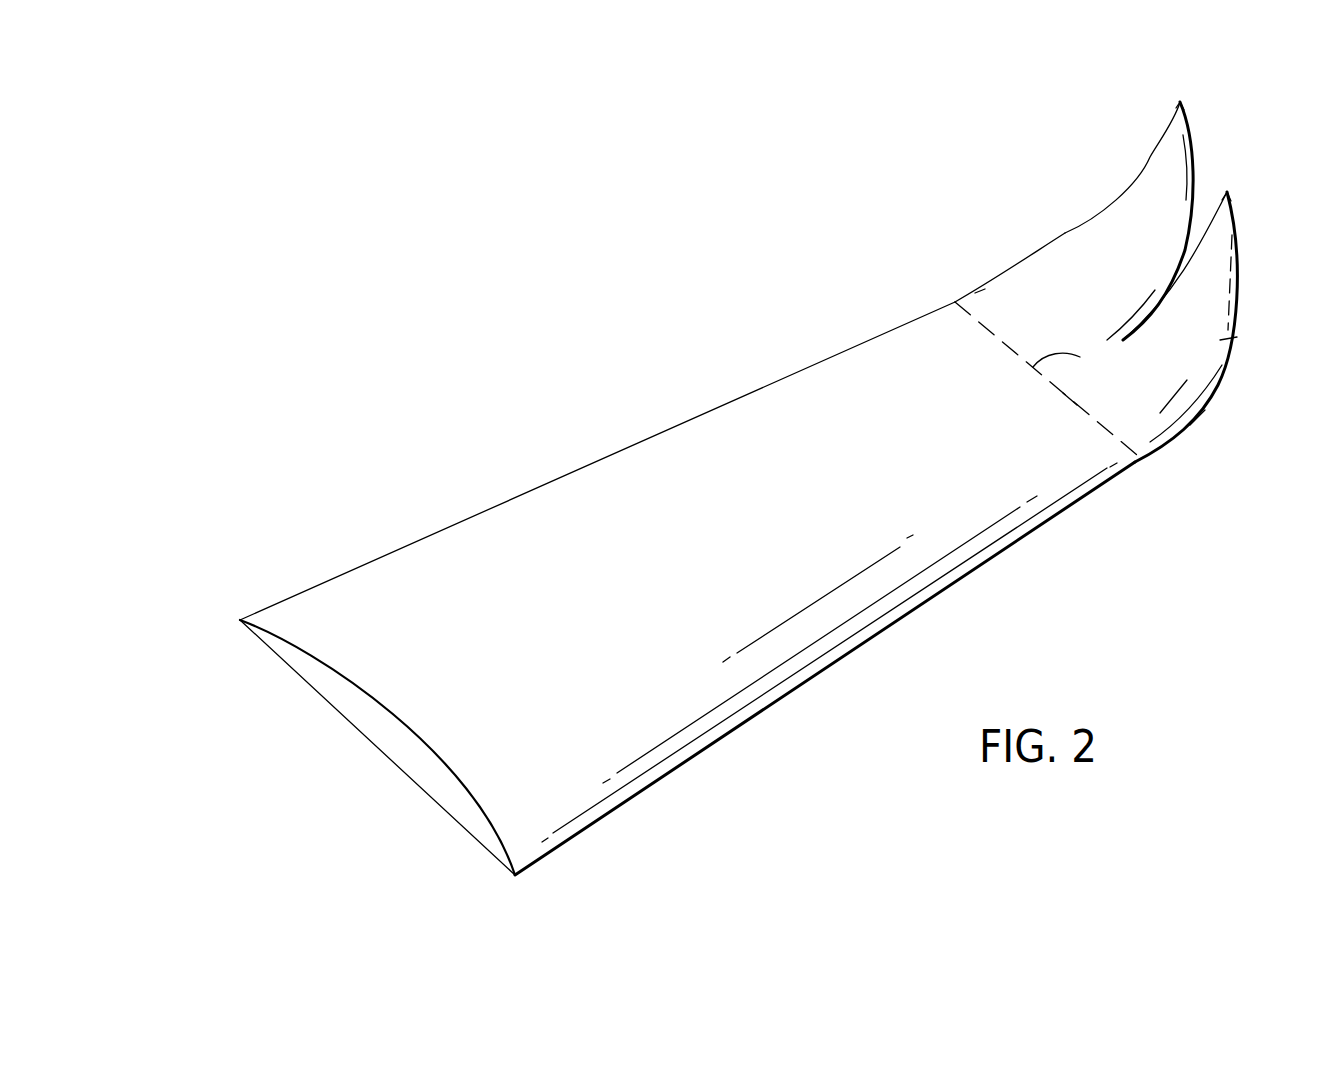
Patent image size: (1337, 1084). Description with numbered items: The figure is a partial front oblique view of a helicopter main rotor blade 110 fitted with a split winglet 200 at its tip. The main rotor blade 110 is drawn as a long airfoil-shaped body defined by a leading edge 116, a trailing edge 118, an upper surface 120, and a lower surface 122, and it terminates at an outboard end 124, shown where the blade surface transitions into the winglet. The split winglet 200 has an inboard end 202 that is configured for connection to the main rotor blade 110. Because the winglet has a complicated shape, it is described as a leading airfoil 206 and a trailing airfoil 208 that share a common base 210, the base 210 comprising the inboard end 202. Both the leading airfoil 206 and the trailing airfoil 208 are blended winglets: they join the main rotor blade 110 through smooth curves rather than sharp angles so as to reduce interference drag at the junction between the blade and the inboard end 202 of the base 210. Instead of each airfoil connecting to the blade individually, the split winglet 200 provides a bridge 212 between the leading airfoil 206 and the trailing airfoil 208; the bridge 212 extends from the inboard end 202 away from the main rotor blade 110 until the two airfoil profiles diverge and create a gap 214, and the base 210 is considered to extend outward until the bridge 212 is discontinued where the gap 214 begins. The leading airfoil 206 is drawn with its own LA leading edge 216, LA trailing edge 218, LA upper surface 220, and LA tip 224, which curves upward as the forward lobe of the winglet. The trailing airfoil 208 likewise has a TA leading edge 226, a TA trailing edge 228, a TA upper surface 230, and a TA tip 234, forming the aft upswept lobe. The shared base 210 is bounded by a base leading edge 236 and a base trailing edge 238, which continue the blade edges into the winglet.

The main rotor blade 110 is at (691, 586).
The leading edge 116 is at (813, 677).
The trailing edge 118 is at (443, 530).
The upper surface 120 is at (755, 410).
The lower surface 122 is at (357, 737).
The outboard end 124 is at (1010, 337).
The split winglet 200 is at (1136, 269).
The inboard end 202 is at (1080, 397).
The leading airfoil 206 is at (1220, 316).
The trailing airfoil 208 is at (1103, 191).
The base 210 is at (1197, 418).
The bridge 212 is at (1033, 363).
The gap 214 is at (1180, 270).
The LA leading edge 216 is at (1247, 302).
The LA trailing edge 218 is at (1167, 298).
The LA upper surface 220 is at (1237, 335).
The LA tip 224 is at (1228, 193).
The TA leading edge 226 is at (1193, 127).
The TA trailing edge 228 is at (1167, 128).
The TA upper surface 230 is at (1138, 202).
The TA tip 234 is at (1181, 101).
The base leading edge 236 is at (1173, 443).
The base trailing edge 238 is at (987, 288).